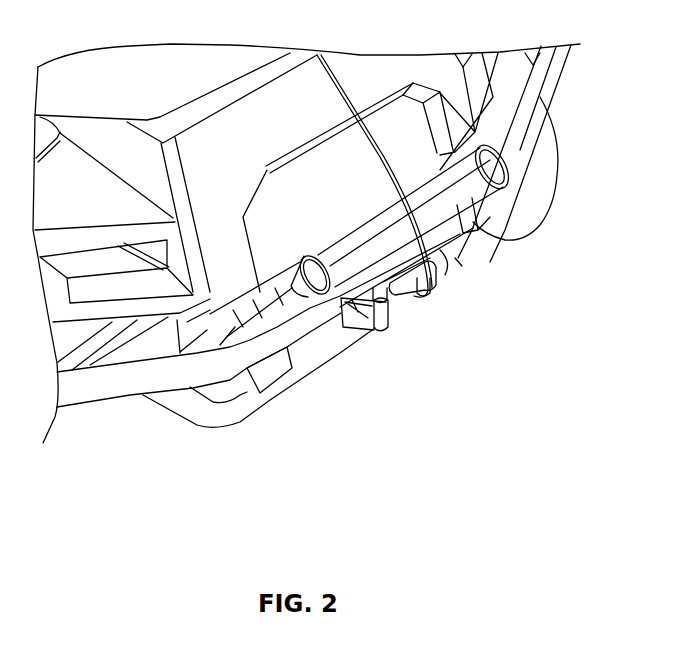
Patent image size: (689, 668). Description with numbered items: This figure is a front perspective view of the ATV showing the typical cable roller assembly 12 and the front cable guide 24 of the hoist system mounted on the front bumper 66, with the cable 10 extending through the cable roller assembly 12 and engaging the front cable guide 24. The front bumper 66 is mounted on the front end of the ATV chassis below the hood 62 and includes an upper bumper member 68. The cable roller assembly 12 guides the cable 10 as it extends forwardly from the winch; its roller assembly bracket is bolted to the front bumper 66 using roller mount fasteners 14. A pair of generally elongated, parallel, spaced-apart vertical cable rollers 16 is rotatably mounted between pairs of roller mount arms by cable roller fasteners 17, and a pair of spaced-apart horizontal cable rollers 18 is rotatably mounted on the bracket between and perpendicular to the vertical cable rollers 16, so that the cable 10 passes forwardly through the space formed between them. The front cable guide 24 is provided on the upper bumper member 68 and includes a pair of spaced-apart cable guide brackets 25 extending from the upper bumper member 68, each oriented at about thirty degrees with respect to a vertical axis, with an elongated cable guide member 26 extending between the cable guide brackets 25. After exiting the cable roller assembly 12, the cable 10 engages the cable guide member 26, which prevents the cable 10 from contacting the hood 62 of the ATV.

The cable 10 is at (446, 276).
The cable roller assembly 12 is at (368, 337).
The roller mount fasteners 14 is at (343, 290).
The vertical cable rollers 16 is at (440, 312).
The cable roller fasteners 17 is at (450, 298).
The horizontal cable rollers 18 is at (410, 305).
The front cable guide 24 is at (470, 200).
The cable guide brackets 25 is at (503, 153).
The cable guide member 26 is at (435, 240).
The hood 62 is at (149, 89).
The front bumper 66 is at (563, 64).
The upper bumper member 68 is at (543, 78).